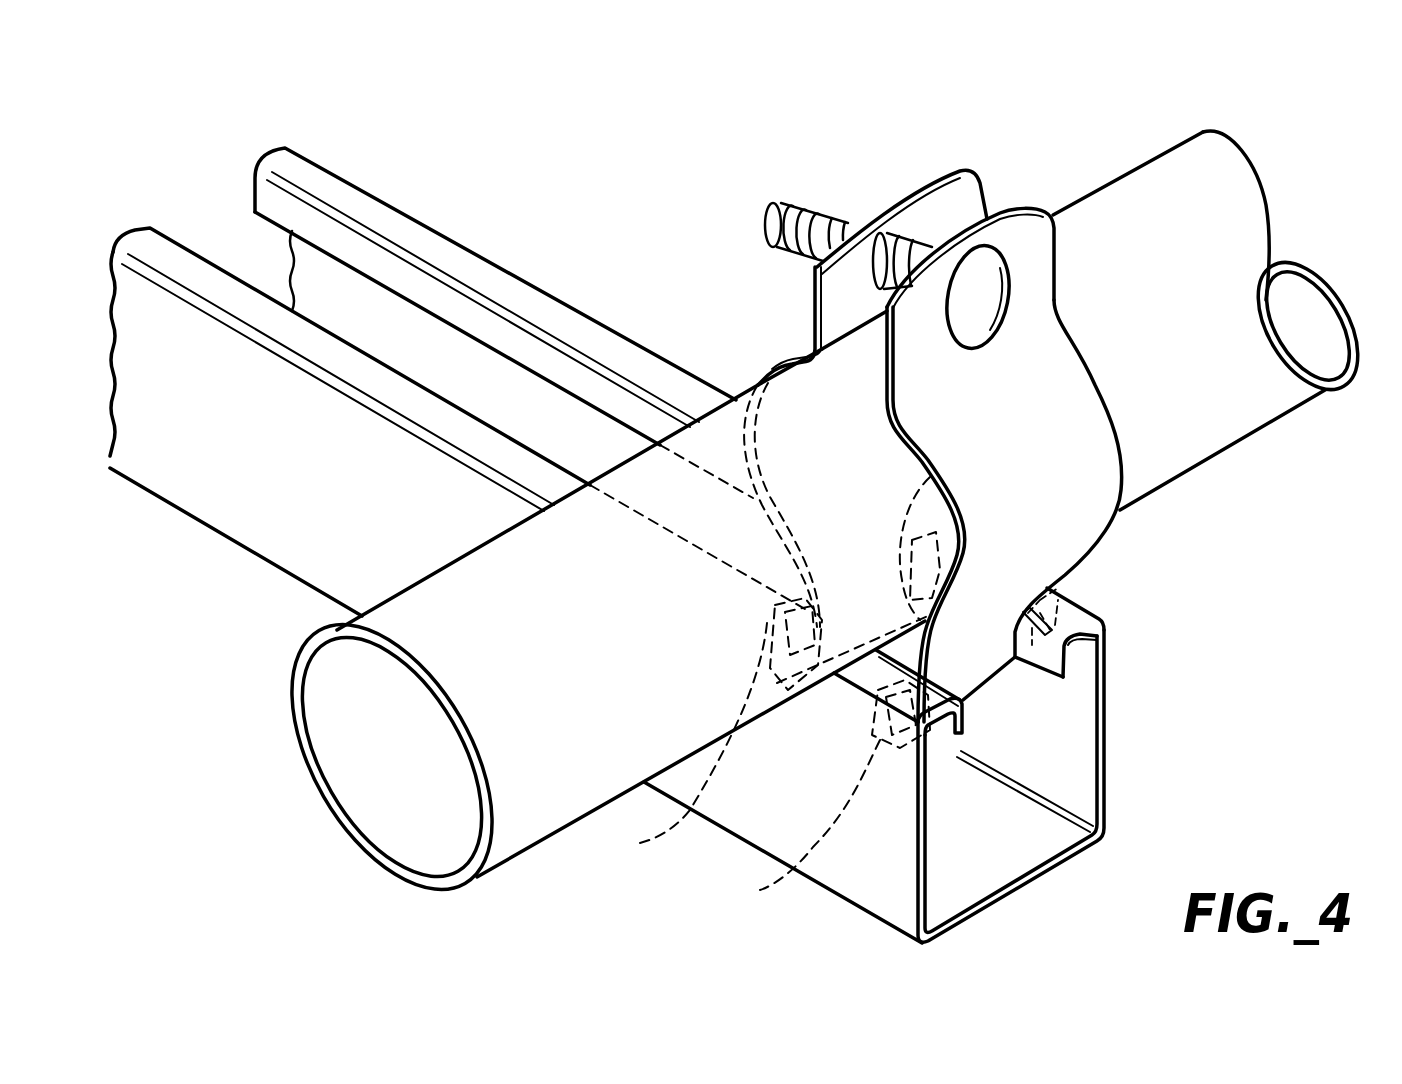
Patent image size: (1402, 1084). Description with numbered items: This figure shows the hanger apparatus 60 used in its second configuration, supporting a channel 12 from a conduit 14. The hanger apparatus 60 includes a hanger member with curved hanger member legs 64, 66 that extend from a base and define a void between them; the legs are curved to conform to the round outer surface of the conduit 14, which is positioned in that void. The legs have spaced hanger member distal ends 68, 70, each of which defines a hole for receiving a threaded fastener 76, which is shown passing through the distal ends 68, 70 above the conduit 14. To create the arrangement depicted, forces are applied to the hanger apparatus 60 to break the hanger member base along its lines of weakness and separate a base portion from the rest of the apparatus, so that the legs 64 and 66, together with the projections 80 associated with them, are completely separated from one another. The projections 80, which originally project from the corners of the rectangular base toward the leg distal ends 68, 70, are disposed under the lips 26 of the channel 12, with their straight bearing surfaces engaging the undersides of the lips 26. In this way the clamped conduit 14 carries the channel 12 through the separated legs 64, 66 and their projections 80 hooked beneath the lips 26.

The channel 12 is at (914, 777).
The conduit 14 is at (1207, 152).
The lips 26 is at (963, 733).
The hanger apparatus 60 is at (886, 516).
The hanger member leg 64 is at (790, 360).
The hanger member leg 66 is at (1087, 423).
The hanger member distal end 68 is at (950, 170).
The hanger member distal end 70 is at (1043, 250).
The threaded fastener 76 is at (797, 210).
The projections 80 is at (905, 565).